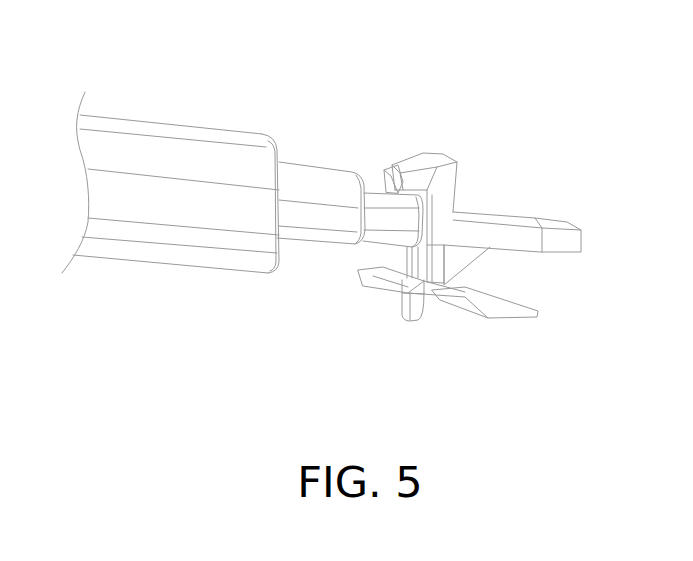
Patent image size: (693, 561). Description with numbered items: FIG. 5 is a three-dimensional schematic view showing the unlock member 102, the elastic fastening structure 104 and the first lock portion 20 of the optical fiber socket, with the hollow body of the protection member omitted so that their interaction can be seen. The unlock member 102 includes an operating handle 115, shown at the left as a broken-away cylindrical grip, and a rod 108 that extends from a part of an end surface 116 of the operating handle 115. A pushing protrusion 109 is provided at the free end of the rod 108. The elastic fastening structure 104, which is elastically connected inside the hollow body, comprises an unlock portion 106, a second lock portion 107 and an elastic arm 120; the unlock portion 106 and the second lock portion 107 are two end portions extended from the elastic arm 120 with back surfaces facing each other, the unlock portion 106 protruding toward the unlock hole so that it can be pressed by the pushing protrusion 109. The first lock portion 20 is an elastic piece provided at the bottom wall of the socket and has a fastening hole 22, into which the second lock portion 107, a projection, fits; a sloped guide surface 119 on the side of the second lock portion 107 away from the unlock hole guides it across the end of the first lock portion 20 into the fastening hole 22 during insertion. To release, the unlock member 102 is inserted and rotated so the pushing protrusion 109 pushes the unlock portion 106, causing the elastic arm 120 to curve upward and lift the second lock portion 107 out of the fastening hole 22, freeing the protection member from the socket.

The unlock member 102 is at (210, 185).
The operating handle 115 is at (206, 153).
The end surface 116 is at (273, 142).
The rod 108 is at (380, 217).
The pushing protrusion 109 is at (388, 190).
The elastic fastening structure 104 is at (527, 176).
The unlock portion 106 is at (448, 178).
The second lock portion 107 is at (423, 305).
The elastic arm 120 is at (440, 110).
The first lock portion 20 is at (493, 302).
The fastening hole 22 is at (405, 277).
The sloped guide surface 119 is at (431, 305).